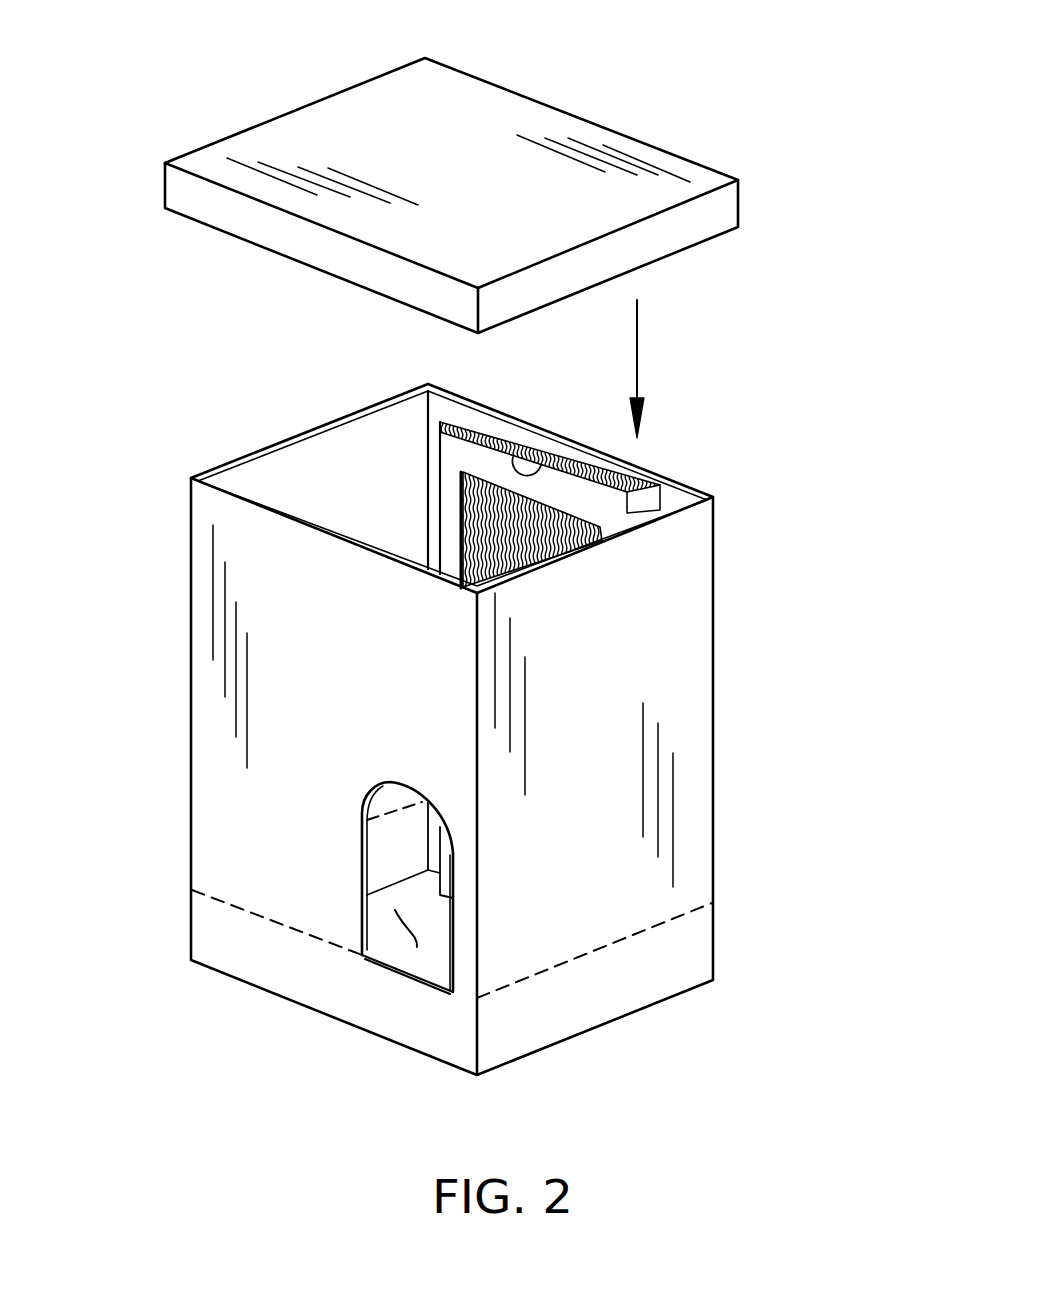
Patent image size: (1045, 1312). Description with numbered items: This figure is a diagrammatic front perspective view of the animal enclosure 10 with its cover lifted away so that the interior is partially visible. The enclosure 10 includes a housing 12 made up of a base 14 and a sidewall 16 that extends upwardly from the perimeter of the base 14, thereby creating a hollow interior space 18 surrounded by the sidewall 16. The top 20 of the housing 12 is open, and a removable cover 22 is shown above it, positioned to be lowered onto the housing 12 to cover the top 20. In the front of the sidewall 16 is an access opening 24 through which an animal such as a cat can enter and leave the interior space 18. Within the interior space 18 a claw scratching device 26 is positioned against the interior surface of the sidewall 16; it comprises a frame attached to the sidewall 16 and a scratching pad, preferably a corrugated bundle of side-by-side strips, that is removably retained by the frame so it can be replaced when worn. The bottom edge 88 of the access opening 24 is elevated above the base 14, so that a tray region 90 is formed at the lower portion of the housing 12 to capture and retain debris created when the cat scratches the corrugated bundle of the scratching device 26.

The animal enclosure 10 is at (850, 152).
The housing 12 is at (712, 735).
The base 14 is at (405, 928).
The sidewall 16 is at (207, 682).
The interior space 18 is at (270, 452).
The top 20 is at (695, 490).
The removable cover 22 is at (555, 128).
The access opening 24 is at (362, 892).
The claw scratching device 26 is at (673, 438).
The bottom edge 88 is at (417, 947).
The tray region 90 is at (697, 957).